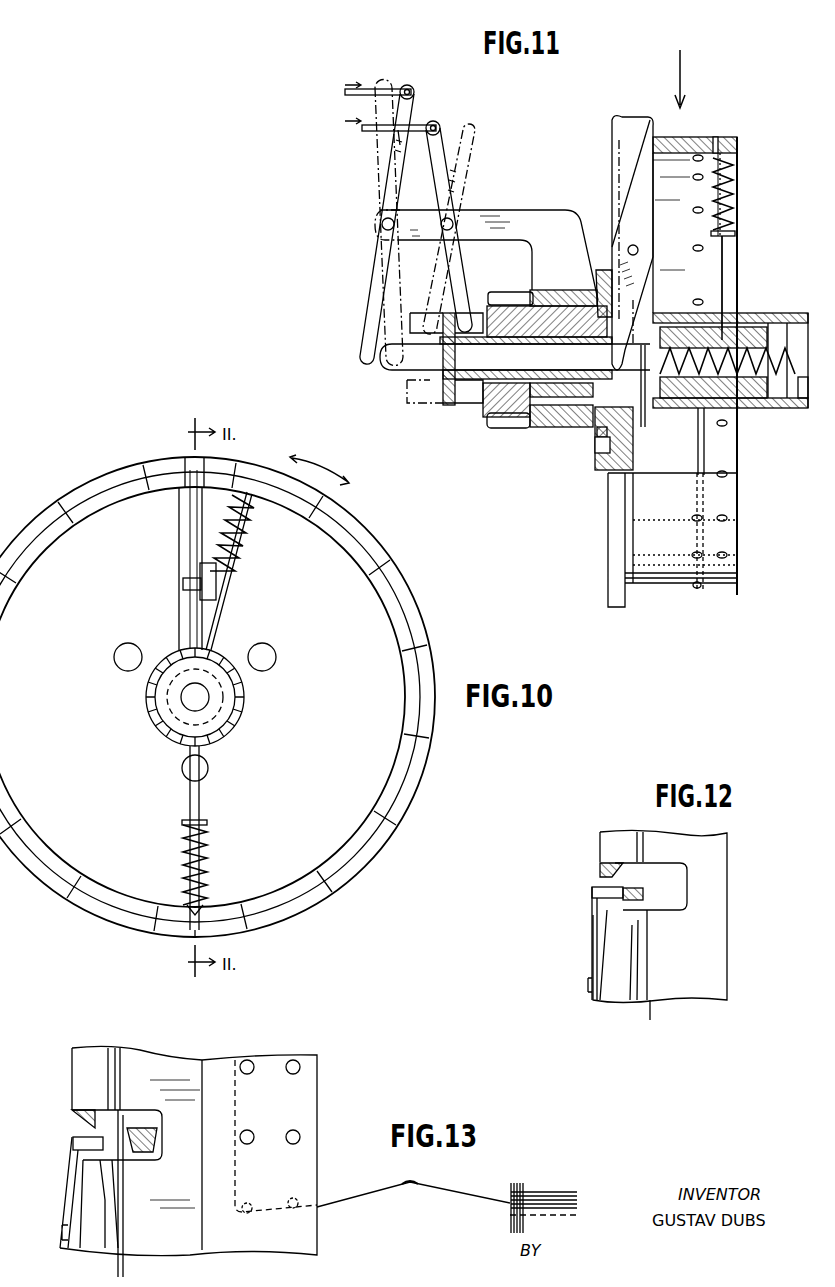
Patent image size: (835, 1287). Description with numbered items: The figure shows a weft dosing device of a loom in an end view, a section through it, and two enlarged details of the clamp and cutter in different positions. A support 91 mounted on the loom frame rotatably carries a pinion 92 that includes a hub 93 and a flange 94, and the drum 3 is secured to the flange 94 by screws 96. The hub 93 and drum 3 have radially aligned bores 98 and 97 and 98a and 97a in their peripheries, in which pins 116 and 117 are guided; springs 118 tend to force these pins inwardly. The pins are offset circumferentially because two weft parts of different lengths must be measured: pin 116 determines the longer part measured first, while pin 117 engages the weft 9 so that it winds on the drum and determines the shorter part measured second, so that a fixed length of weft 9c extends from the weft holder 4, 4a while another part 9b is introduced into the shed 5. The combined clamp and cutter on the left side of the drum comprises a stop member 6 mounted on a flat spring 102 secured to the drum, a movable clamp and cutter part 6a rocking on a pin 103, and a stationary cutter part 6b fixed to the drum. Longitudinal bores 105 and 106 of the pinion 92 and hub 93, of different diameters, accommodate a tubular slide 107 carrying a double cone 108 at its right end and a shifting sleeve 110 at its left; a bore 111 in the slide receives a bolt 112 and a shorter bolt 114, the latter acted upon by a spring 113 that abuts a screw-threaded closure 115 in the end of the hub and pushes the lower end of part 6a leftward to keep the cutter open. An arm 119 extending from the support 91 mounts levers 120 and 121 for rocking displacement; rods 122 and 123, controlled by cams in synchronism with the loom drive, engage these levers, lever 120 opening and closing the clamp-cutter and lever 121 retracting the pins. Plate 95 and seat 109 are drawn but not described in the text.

In FIG. 11, the drum 3 is at (680, 137).
In FIG. 12, the drum 3 is at (660, 925).
In FIG. 13, the drum 3 is at (160, 1052).
In FIG. 13, the weft holder 4 is at (408, 1184).
In FIG. 13, the weft holder 4a is at (410, 1188).
In FIG. 13, the shed 5 is at (521, 1190).
In FIG. 11, the stop member 6 is at (642, 172).
In FIG. 12, the stop member 6 is at (592, 892).
In FIG. 13, the stop member 6 is at (73, 1143).
In FIG. 11, the movable clamp and cutter part 6a is at (648, 190).
In FIG. 12, the movable clamp and cutter part 6a is at (644, 893).
In FIG. 13, the movable clamp and cutter part 6a is at (152, 1150).
In FIG. 11, the stationary cutter part 6b is at (613, 145).
In FIG. 12, the stationary cutter part 6b is at (598, 866).
In FIG. 13, the stationary cutter part 6b is at (70, 1116).
In FIG. 13, the weft 9 is at (120, 1120).
In FIG. 13, the weft part 9b is at (340, 1200).
In FIG. 13, the weft length 9c is at (200, 1070).
In FIG. 11, the support 91 is at (540, 291).
In FIG. 11, the pinion 92 is at (513, 412).
In FIG. 11, the hub 93 is at (746, 314).
In FIG. 11, the flange 94 is at (603, 270).
In FIG. 13, the plate 95 is at (285, 1055).
In FIG. 11, the screws 96 is at (603, 446).
In FIG. 10, the screws 96 is at (118, 664).
In FIG. 11, the bore 97 is at (700, 140).
In FIG. 10, the bore 97 is at (395, 582).
In FIG. 13, the bore 97 is at (248, 1146).
In FIG. 11, the bore 97a is at (735, 520).
In FIG. 13, the bore 97a is at (300, 1136).
In FIG. 11, the bore 98 is at (698, 314).
In FIG. 10, the bore 98 is at (162, 724).
In FIG. 11, the bore 98a is at (718, 416).
In FIG. 12, the flat spring 102 is at (592, 920).
In FIG. 13, the flat spring 102 is at (70, 1180).
In FIG. 11, the pin 103 is at (640, 253).
In FIG. 11, the longitudinal bore 105 is at (503, 407).
In FIG. 11, the longitudinal bore 106 is at (757, 400).
In FIG. 11, the tubular slide 107 is at (555, 392).
In FIG. 11, the double cone 108 is at (792, 402).
In FIG. 11, the seat 109 is at (740, 410).
In FIG. 11, the shifting sleeve 110 is at (450, 404).
In FIG. 11, the bore 111 is at (565, 366).
In FIG. 11, the bolt 112 is at (420, 357).
In FIG. 11, the spring 113 is at (778, 318).
In FIG. 11, the shorter bolt 114 is at (638, 380).
In FIG. 11, the screw-threaded closure 115 is at (806, 376).
In FIG. 11, the pin 116 is at (726, 266).
In FIG. 10, the pin 116 is at (217, 605).
In FIG. 11, the pin 117 is at (697, 455).
In FIG. 10, the pin 117 is at (201, 807).
In FIG. 11, the springs 118 is at (735, 188).
In FIG. 10, the springs 118 is at (240, 570).
In FIG. 11, the arm 119 is at (532, 212).
In FIG. 11, the lever 120 is at (416, 98).
In FIG. 11, the lever 121 is at (442, 126).
In FIG. 11, the rod 122 is at (376, 88).
In FIG. 11, the rod 123 is at (374, 132).